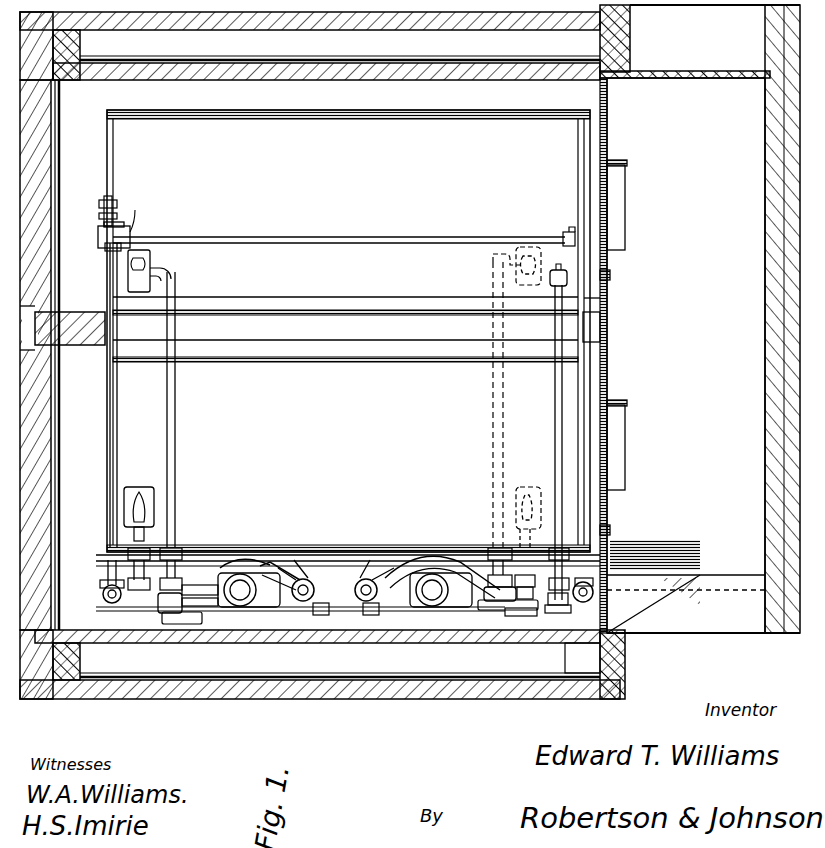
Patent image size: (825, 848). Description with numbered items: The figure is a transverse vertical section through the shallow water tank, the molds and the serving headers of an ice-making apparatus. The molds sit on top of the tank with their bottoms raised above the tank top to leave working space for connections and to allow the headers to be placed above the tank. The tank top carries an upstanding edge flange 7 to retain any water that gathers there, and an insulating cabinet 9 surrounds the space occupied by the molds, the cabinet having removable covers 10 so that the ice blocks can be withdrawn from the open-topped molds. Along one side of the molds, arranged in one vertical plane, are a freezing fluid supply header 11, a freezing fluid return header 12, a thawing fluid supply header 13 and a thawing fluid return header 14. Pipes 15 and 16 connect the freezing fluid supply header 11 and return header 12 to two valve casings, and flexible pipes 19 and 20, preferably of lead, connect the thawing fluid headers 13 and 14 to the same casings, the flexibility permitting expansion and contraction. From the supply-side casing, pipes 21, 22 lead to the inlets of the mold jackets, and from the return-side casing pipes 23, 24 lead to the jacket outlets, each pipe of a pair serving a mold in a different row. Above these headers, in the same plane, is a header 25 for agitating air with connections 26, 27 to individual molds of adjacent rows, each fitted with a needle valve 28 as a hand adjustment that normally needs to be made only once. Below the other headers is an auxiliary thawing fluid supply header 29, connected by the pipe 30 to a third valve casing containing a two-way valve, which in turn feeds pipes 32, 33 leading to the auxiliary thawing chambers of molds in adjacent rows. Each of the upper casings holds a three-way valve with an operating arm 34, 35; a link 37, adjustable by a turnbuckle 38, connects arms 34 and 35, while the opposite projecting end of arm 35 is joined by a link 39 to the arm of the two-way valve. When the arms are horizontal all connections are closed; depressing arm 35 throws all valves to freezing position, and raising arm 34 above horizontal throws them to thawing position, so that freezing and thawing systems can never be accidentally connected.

The upstanding edge flange 7 is at (682, 355).
The insulating cabinet 9 is at (352, 80).
The removable covers 10 is at (78, 355).
The freezing fluid supply header 11 is at (427, 590).
The freezing fluid return header 12 is at (249, 583).
The thawing fluid supply header 13 is at (363, 581).
The thawing fluid return header 14 is at (307, 581).
The pipe 15 is at (612, 278).
The pipe 16 is at (620, 196).
The flexible pipe 19 is at (412, 558).
The flexible pipe 20 is at (206, 556).
The pipe 21 is at (500, 548).
The pipe 22 is at (493, 325).
The pipe 23 is at (170, 611).
The pipe 24 is at (176, 483).
The header for agitating air 25 is at (102, 594).
The connection 26 is at (366, 560).
The connection 27 is at (388, 237).
The needle valve 28 is at (112, 213).
The auxiliary thawing fluid supply header 29 is at (586, 600).
The pipe 30 is at (559, 606).
The pipe 32 is at (530, 548).
The pipe 33 is at (547, 432).
The operating arm 34 is at (190, 605).
The operating arm 35 is at (525, 615).
The link 37 is at (430, 600).
The turnbuckle 38 is at (340, 613).
The link 39 is at (574, 658).